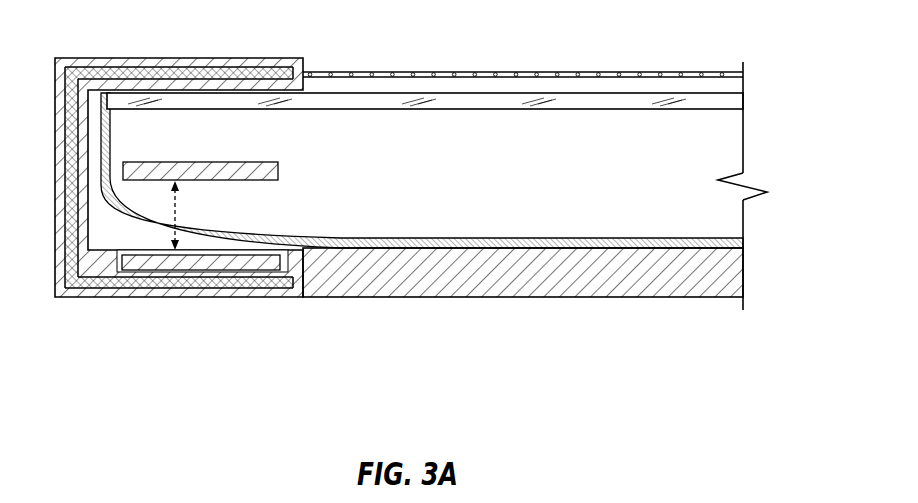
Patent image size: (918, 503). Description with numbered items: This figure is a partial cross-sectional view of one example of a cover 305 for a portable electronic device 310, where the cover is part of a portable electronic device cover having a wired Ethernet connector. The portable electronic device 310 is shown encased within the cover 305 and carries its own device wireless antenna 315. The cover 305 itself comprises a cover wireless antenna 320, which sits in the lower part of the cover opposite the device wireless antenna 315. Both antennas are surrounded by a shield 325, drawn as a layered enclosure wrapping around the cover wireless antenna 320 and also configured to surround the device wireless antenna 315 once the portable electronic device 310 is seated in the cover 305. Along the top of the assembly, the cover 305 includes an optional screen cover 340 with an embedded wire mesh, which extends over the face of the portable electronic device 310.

The cover 305 is at (498, 298).
The portable electronic device 310 is at (732, 145).
The device wireless antenna 315 is at (278, 168).
The cover wireless antenna 320 is at (195, 267).
The shield 325 is at (160, 73).
The screen cover 340 is at (467, 72).